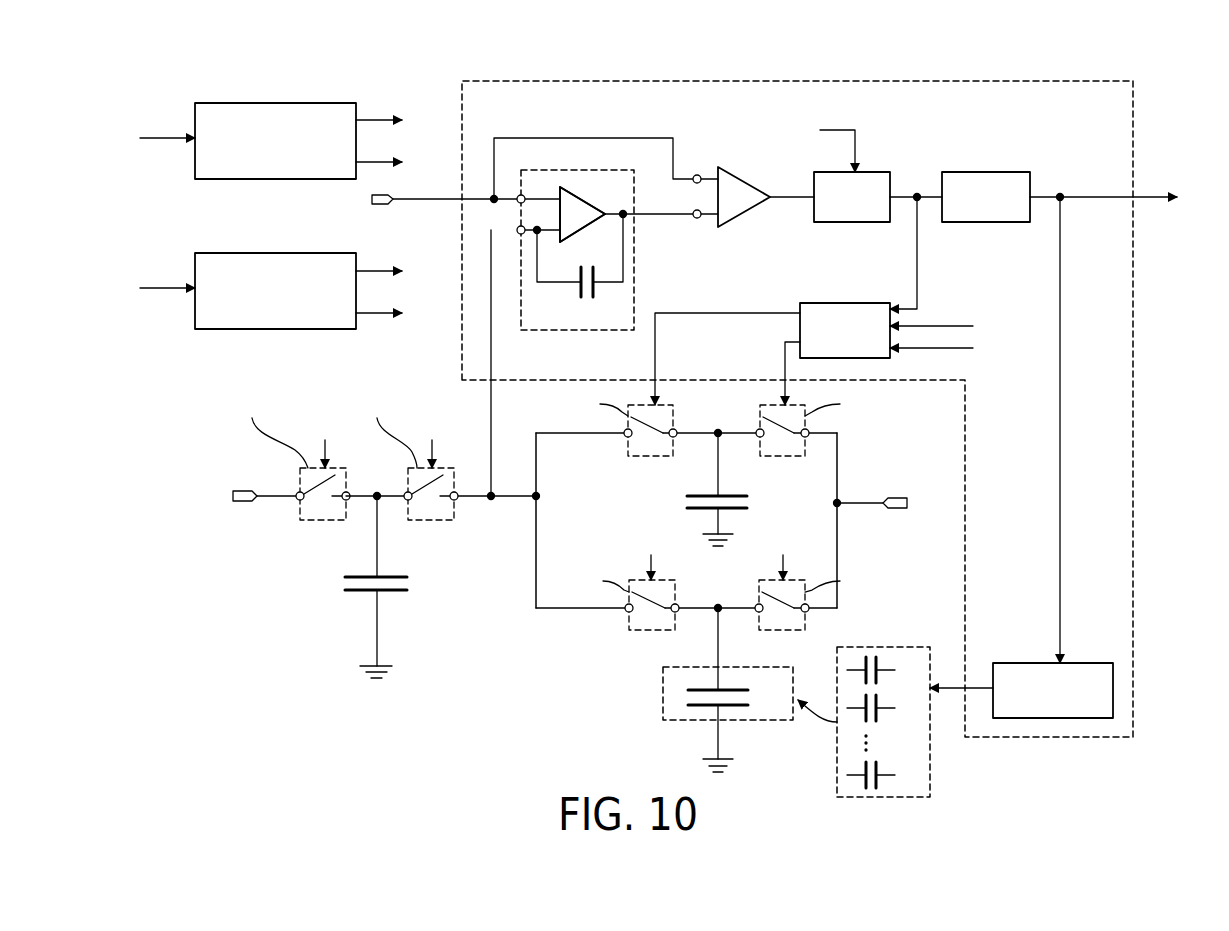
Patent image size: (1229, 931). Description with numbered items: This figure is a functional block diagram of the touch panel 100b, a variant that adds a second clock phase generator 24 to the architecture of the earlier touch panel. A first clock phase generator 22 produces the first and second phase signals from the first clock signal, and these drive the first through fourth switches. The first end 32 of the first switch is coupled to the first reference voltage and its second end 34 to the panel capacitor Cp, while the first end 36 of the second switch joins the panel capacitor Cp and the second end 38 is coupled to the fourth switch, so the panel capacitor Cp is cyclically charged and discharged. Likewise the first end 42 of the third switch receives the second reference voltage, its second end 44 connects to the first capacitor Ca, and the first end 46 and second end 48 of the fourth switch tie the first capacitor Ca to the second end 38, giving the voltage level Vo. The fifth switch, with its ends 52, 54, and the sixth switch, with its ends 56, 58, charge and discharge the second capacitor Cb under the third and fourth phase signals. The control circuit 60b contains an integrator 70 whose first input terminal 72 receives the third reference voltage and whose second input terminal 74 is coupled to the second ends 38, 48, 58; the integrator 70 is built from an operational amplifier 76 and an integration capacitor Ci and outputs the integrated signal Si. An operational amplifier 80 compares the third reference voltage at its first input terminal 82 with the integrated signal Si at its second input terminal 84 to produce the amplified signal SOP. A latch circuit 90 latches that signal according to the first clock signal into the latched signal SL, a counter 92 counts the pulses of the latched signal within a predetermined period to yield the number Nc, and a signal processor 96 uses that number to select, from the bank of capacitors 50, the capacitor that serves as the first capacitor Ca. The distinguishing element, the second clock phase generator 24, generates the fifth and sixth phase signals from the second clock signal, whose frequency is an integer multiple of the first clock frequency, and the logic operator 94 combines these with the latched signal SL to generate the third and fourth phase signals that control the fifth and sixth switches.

The first clock phase generator 22 is at (268, 103).
The second clock phase generator 24 is at (258, 253).
The first end of the first switch 32 is at (299, 501).
The second end of the first switch 34 is at (346, 501).
The first end of the second switch 36 is at (408, 501).
The second end of the second switch 38 is at (454, 501).
The first end of the third switch 42 is at (805, 614).
The second end of the third switch 44 is at (759, 614).
The first end of the fourth switch 46 is at (675, 614).
The second end of the fourth switch 48 is at (629, 614).
The capacitor bank 50 is at (900, 647).
The terminal of switch SW5 52 is at (805, 439).
The terminal of switch SW5 54 is at (760, 439).
The terminal of switch SW6 56 is at (673, 439).
The second end of the sixth switch 58 is at (628, 439).
The control circuit 60b is at (1133, 98).
The integrator 70 is at (582, 214).
The first input terminal of the integrator 72 is at (520, 194).
The second input terminal of the integrator 74 is at (519, 235).
The operational amplifier 76 is at (593, 205).
The operational amplifier 80 is at (725, 192).
The first input terminal of the operational amplifier 82 is at (697, 175).
The second input terminal of the operational amplifier 84 is at (699, 219).
The latch circuit 90 is at (870, 172).
The counter 92 is at (987, 172).
The logic operator 94 is at (845, 303).
The signal processor 96 is at (1085, 663).
The touch panel 100b is at (273, 688).